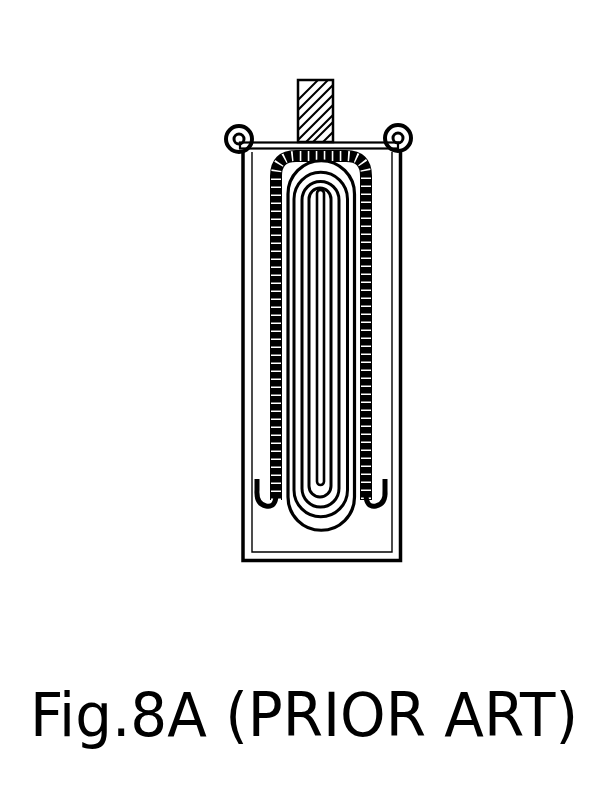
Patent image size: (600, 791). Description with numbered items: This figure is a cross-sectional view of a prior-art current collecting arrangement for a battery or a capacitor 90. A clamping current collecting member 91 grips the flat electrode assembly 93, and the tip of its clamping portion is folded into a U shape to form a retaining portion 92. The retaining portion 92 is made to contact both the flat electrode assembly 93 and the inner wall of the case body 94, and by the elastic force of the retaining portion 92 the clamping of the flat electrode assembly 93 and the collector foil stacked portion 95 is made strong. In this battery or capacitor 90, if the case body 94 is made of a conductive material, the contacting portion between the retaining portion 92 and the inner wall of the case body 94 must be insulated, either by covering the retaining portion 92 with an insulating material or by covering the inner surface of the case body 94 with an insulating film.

The battery or capacitor 90 is at (193, 62).
The clamping current collecting member 91 is at (390, 199).
The retaining portion 92 is at (393, 489).
The flat electrode assembly 93 is at (278, 546).
The case body 94 is at (396, 325).
The collector foil stacked portion 95 is at (348, 518).